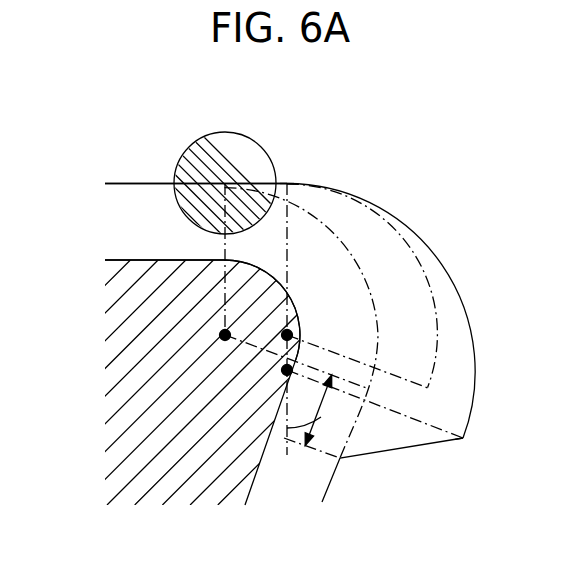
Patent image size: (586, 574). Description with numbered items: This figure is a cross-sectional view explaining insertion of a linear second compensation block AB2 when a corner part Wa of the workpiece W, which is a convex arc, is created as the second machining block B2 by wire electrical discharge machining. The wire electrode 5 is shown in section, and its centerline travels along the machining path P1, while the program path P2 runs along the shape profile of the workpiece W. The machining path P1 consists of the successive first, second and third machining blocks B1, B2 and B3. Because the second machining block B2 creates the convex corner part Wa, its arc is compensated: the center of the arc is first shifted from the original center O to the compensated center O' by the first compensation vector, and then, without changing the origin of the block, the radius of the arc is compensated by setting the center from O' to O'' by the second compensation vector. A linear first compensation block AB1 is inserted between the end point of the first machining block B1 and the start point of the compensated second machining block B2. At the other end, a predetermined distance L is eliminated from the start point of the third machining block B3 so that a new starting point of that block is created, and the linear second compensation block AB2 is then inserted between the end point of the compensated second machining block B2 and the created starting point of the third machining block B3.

The wire electrode 5 is at (235, 133).
The machining path P1 is at (113, 183).
The first machining block B1 is at (157, 183).
The first compensation block AB1 is at (283, 181).
The second machining block B2 is at (421, 238).
The third machining block B3 is at (328, 484).
The second compensation block AB2 is at (461, 441).
The workpiece W is at (103, 362).
The program path P2 is at (145, 259).
The corner part Wa is at (293, 293).
The center of the arc of the second machining block O is at (214, 331).
The compensated center of the arc O' is at (276, 320).
The radius-compensated center of the arc O'' is at (276, 386).
The predetermined distance L is at (305, 427).